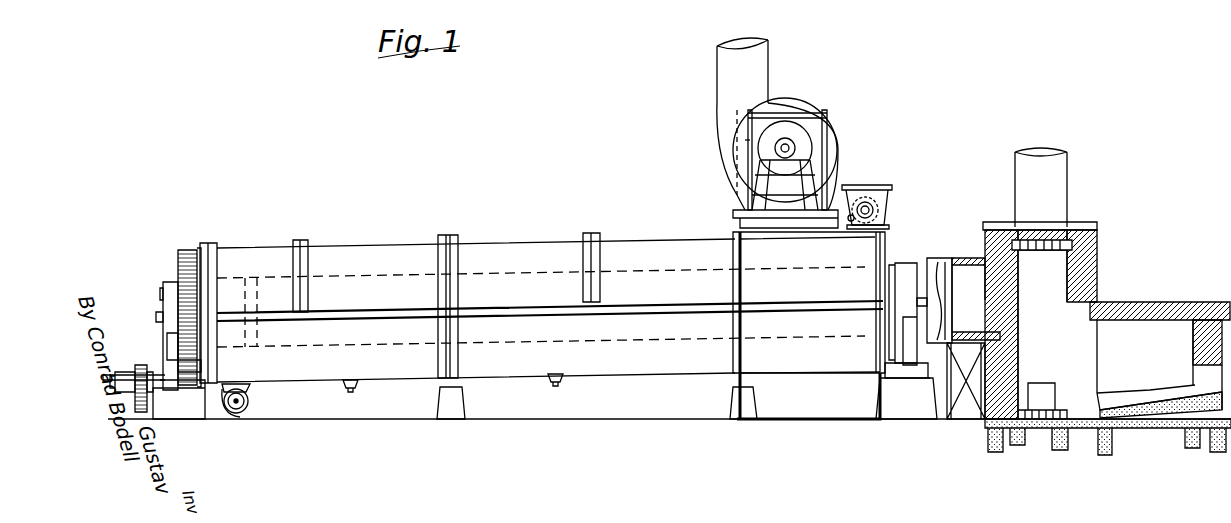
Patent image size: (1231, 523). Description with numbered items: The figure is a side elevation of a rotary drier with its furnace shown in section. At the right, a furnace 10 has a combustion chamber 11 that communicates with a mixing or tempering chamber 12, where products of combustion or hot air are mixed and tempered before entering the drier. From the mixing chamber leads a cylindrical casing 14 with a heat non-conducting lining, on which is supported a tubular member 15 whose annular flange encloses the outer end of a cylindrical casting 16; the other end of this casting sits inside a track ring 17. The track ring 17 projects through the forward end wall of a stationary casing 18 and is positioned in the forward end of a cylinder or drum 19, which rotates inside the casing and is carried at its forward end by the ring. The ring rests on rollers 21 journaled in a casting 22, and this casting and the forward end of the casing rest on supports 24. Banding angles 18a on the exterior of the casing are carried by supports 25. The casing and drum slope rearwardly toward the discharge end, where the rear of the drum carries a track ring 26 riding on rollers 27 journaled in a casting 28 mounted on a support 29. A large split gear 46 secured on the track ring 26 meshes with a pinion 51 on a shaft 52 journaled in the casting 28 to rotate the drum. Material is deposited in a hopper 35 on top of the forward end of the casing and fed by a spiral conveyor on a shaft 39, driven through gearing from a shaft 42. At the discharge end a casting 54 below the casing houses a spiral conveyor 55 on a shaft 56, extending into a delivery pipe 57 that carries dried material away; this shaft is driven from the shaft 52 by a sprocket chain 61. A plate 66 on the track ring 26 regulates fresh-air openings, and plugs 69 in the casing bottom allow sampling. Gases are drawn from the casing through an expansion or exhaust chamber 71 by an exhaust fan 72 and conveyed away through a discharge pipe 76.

The furnace 10 is at (1183, 405).
The combustion chamber 11 is at (1150, 312).
The mixing or tempering chamber 12 is at (1050, 292).
The cylindrical casing 14 is at (968, 256).
The tubular member 15 is at (946, 258).
The cylindrical casting 16 is at (929, 257).
The track ring 17 is at (903, 262).
The stationary casing 18 is at (515, 247).
The banding angles 18a is at (447, 235).
The cylinder or drum 19 is at (822, 330).
The rollers 21 is at (905, 333).
The casting 22 is at (915, 360).
The supports 24 is at (906, 398).
The supports 25 is at (456, 408).
The track ring 26 is at (168, 288).
The rollers 27 is at (167, 340).
The casting 28 is at (180, 362).
The support 29 is at (179, 399).
The hopper 35 is at (872, 186).
The shaft 39 is at (876, 206).
The shaft 42 is at (878, 214).
The large gear 46 is at (190, 250).
The pinion 51 is at (196, 395).
The shaft 52 is at (106, 376).
The casting 54 is at (250, 388).
The spiral conveyor 55 is at (244, 408).
The shaft 56 is at (237, 405).
The delivery pipe 57 is at (248, 403).
The sprocket chain 61 is at (156, 318).
The plate 66 is at (162, 292).
The plugs 69 is at (358, 388).
The expansion or exhaust chamber 71 is at (738, 142).
The exhaust fan 72 is at (808, 108).
The discharge pipe 76 is at (727, 73).